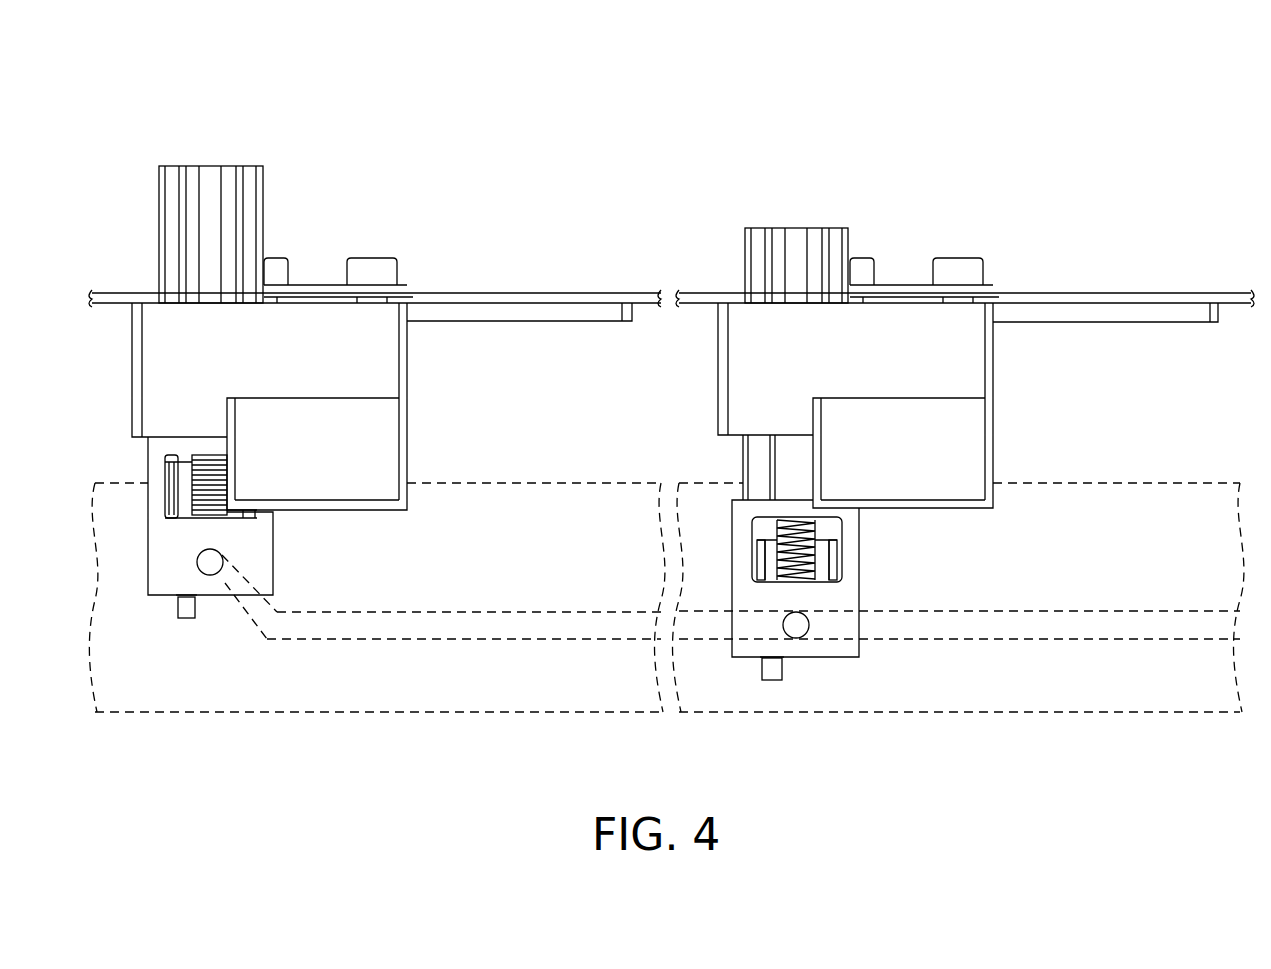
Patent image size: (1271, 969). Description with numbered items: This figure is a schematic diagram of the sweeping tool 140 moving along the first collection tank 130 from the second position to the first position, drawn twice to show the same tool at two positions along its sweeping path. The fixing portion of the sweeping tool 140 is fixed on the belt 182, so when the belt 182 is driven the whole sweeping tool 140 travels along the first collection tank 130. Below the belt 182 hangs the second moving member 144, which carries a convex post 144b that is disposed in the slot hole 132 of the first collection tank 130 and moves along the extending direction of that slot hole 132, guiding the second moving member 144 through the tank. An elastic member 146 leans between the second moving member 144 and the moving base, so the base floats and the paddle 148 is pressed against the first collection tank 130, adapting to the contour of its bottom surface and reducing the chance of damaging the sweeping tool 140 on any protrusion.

The first collection tank 130 is at (1170, 690).
The slot hole 132 is at (438, 640).
The sweeping tool 140 is at (133, 147).
The second moving member 144 is at (215, 583).
The convex post 144b is at (210, 565).
The elastic member 146 is at (193, 470).
The paddle 148 is at (185, 620).
The belt 182 is at (528, 298).